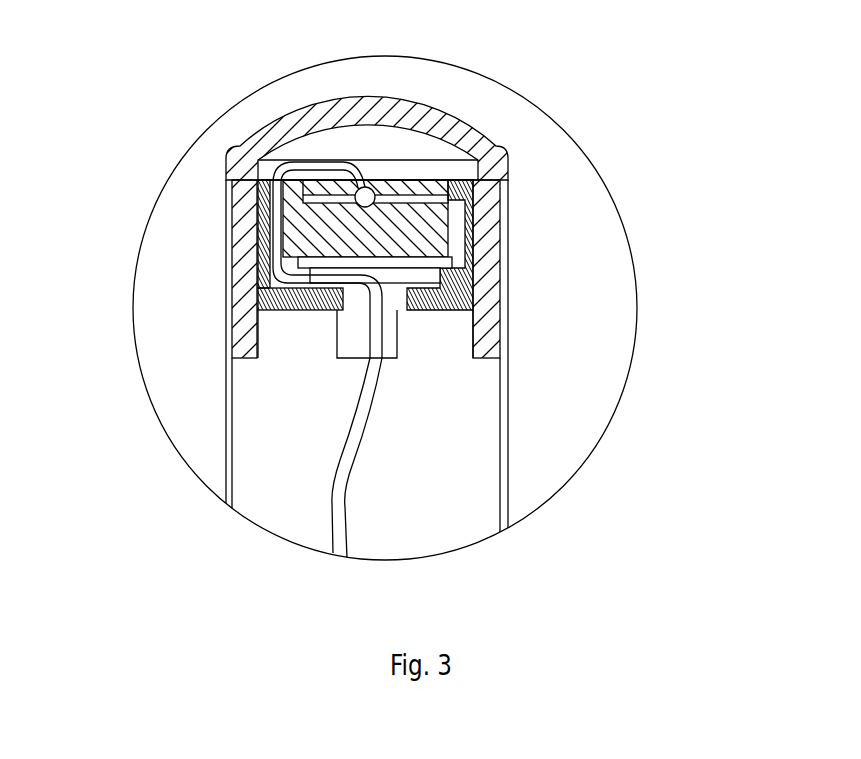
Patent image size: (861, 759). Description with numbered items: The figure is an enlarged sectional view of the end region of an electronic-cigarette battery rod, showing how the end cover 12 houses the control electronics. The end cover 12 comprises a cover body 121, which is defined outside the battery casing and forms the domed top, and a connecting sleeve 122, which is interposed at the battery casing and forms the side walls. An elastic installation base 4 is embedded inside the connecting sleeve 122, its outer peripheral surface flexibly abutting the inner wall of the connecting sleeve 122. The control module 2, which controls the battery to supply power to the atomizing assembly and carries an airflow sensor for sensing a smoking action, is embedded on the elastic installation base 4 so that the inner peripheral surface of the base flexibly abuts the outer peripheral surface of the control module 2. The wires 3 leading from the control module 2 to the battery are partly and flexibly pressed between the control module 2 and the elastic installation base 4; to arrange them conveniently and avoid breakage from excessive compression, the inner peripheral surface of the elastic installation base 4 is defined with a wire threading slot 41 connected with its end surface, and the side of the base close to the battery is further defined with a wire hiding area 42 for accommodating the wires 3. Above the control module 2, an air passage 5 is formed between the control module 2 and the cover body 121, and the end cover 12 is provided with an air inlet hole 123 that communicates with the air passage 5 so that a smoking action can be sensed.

The end cover 12 is at (703, 213).
The cover body 121 is at (519, 119).
The connecting sleeve 122 is at (509, 220).
The air inlet hole 123 is at (224, 165).
The control module 2 is at (292, 240).
The wires 3 is at (375, 474).
The elastic installation base 4 is at (404, 216).
The wire threading slot 41 is at (232, 313).
The wire hiding area 42 is at (433, 237).
The air passage 5 is at (330, 158).